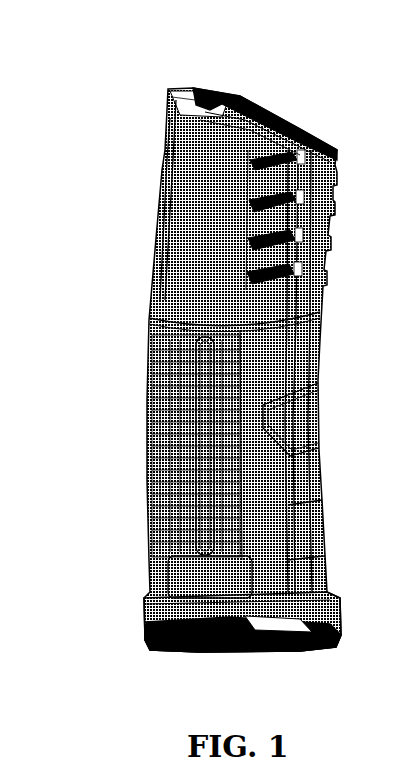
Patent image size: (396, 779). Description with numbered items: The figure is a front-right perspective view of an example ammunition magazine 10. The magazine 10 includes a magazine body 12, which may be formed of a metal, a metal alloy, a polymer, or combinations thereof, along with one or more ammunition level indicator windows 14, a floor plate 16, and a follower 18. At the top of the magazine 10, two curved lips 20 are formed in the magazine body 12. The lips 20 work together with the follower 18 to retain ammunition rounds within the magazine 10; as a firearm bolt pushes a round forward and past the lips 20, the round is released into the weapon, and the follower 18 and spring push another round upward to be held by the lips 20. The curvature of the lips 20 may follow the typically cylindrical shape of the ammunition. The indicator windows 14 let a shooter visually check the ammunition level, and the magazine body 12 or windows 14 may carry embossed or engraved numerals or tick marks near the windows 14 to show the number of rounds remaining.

The ammunition magazine 10 is at (148, 130).
The magazine body 12 is at (182, 288).
The ammunition level indicator window 14 is at (195, 405).
The floor plate 16 is at (148, 628).
The follower 18 is at (302, 140).
The lips 20 is at (237, 107).